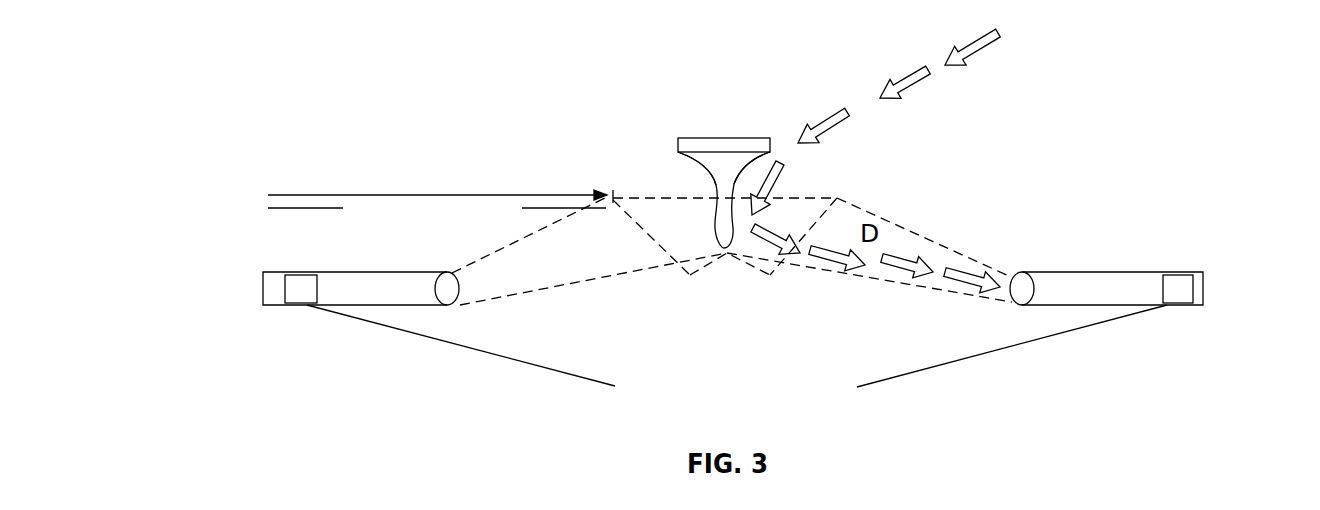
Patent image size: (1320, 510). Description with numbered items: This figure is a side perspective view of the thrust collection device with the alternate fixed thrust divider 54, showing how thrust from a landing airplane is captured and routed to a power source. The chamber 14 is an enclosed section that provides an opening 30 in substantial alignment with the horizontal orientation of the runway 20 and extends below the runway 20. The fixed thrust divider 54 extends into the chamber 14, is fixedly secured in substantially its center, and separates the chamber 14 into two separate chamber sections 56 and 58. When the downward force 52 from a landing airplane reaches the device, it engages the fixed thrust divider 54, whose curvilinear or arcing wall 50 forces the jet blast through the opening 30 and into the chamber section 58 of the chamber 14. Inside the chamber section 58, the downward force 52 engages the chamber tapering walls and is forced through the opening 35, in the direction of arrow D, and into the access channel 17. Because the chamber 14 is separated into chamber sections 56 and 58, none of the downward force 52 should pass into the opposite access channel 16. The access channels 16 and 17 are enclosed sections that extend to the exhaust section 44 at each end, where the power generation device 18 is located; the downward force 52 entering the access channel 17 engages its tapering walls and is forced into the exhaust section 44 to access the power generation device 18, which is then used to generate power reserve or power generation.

The chamber 14 is at (737, 250).
The access channel 16 is at (517, 290).
The access channel 17 is at (900, 277).
The power generation device 18 is at (780, 397).
The runway 20 is at (337, 220).
The opening 30 is at (620, 186).
The opening 35 is at (813, 223).
The exhaust section 44 is at (293, 290).
The curvilinear or arcing wall 50 is at (693, 153).
The downward force 52 is at (912, 88).
The fixed thrust divider 54 is at (668, 134).
The chamber section 56 is at (697, 258).
The chamber section 58 is at (767, 257).